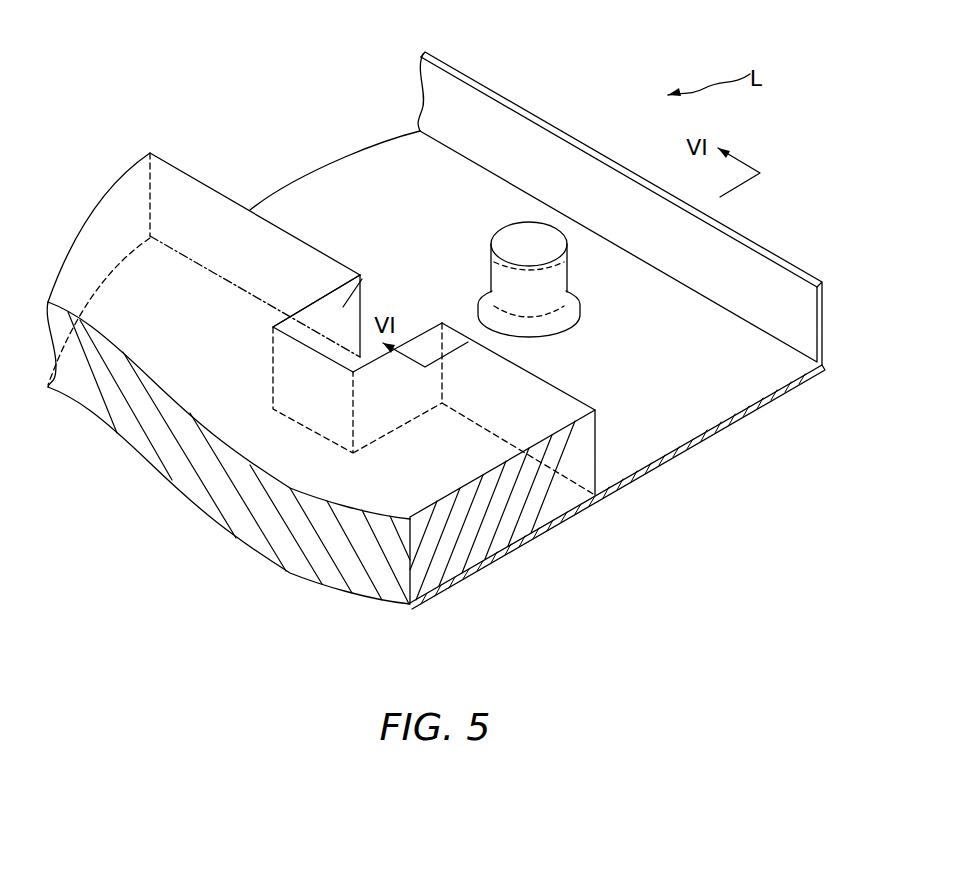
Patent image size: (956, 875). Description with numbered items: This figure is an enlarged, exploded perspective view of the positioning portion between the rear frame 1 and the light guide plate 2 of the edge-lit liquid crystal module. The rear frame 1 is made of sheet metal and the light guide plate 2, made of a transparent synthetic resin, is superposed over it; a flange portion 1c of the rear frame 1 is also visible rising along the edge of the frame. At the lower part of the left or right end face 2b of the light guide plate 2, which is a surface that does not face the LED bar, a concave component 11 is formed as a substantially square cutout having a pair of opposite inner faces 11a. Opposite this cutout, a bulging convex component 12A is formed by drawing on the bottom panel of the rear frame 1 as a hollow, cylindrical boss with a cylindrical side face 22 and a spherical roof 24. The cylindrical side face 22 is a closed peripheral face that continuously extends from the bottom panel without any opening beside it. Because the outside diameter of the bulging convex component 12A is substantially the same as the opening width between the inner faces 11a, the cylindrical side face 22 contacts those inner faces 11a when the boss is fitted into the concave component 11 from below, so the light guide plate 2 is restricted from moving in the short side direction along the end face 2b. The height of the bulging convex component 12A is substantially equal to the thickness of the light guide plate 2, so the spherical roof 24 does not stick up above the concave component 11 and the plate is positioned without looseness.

The rear frame 1 is at (682, 417).
The flange portion of base member 1c is at (762, 248).
The light guide plate 2 is at (477, 449).
The end face 2b is at (563, 372).
The concave component 11 is at (413, 336).
The inner face 11a is at (375, 348).
The bulging convex component 12A is at (533, 222).
The cylindrical side face 22 is at (552, 290).
The spherical roof 24 is at (507, 247).